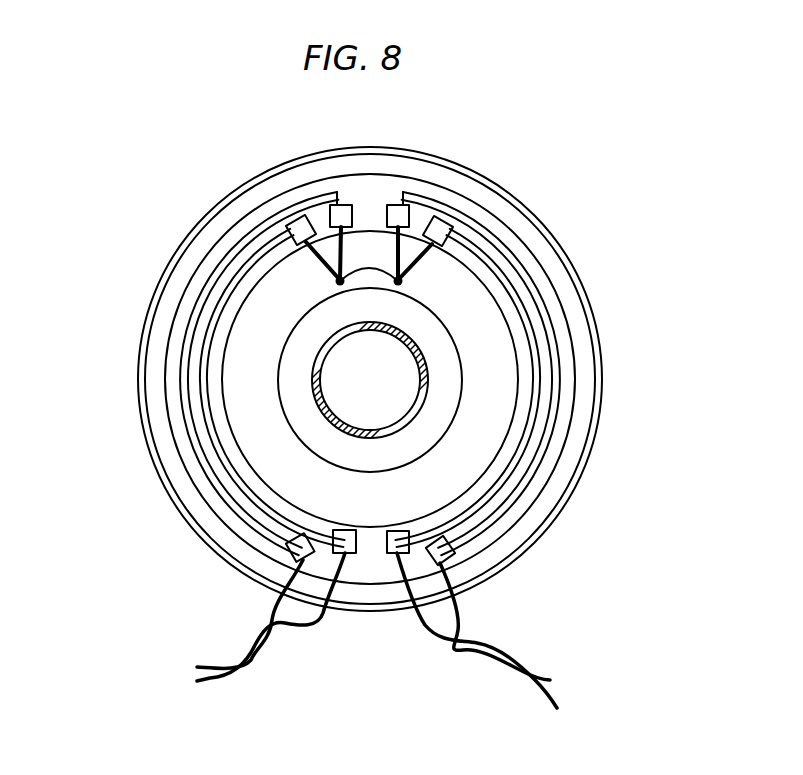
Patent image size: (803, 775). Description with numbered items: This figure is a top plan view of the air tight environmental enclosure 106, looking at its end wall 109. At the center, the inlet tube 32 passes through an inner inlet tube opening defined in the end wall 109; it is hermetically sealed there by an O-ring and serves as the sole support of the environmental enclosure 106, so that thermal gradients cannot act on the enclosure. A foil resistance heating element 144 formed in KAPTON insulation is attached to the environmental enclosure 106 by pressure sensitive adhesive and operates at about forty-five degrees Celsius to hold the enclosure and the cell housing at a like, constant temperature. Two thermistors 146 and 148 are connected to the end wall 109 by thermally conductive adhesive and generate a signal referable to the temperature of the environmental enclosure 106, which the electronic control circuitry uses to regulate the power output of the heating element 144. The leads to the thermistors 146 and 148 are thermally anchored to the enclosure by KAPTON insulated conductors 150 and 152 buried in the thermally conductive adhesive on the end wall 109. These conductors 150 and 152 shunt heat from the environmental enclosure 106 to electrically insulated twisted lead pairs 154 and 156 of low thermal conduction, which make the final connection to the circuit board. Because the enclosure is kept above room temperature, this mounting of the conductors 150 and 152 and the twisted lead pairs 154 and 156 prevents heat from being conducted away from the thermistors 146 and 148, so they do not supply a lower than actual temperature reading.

The air tight environmental enclosure 106 is at (592, 386).
The foil resistance heating element 144 is at (592, 327).
The KAPTON insulated conductor 150 is at (185, 345).
The KAPTON insulated conductor 152 is at (220, 300).
The end wall 109 is at (245, 380).
The inlet tube 32 is at (321, 407).
The thermistor 146 is at (355, 272).
The thermistor 148 is at (405, 283).
The twisted lead pair 154 is at (217, 678).
The twisted lead pair 156 is at (553, 680).